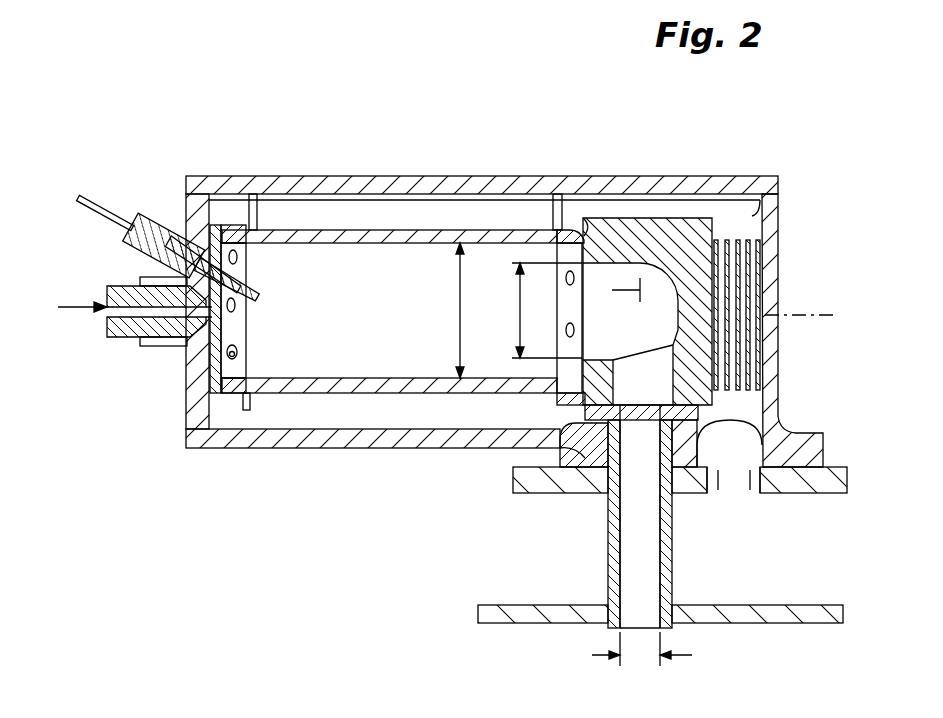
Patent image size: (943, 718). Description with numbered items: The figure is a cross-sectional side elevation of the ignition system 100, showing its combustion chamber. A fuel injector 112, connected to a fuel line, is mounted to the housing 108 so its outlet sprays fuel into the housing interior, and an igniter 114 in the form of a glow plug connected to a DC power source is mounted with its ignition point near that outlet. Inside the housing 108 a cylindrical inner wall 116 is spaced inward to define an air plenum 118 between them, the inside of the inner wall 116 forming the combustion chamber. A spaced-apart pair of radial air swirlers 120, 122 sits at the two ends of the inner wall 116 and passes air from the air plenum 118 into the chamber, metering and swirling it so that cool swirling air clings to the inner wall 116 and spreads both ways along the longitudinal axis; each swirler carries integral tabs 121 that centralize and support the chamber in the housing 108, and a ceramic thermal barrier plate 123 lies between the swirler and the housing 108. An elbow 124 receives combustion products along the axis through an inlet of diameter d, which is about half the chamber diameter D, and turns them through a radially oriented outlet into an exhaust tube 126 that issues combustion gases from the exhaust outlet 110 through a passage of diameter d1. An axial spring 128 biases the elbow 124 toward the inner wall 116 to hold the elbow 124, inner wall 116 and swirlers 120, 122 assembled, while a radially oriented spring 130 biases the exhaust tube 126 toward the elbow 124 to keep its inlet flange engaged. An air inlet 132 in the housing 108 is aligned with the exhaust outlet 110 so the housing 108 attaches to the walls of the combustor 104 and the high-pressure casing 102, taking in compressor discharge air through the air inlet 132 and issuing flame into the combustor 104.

The ignition system 100 is at (212, 132).
The high-pressure casing 102 is at (806, 490).
The combustor 104 is at (794, 624).
The housing 108 is at (782, 190).
The exhaust outlet 110 is at (643, 630).
The fuel injector 112 is at (116, 340).
The igniter 114 is at (150, 222).
The inner wall 116 is at (407, 238).
The air plenum 118 is at (328, 196).
The air swirler 120 is at (232, 404).
The tabs 121 is at (250, 196).
The air swirler 122 is at (572, 236).
The ceramic thermal barrier plate 123 is at (213, 386).
The elbow 124 is at (639, 240).
The exhaust tube 126 is at (674, 554).
The axial spring 128 is at (764, 216).
The radially oriented spring 130 is at (592, 490).
The air inlet 132 is at (735, 450).